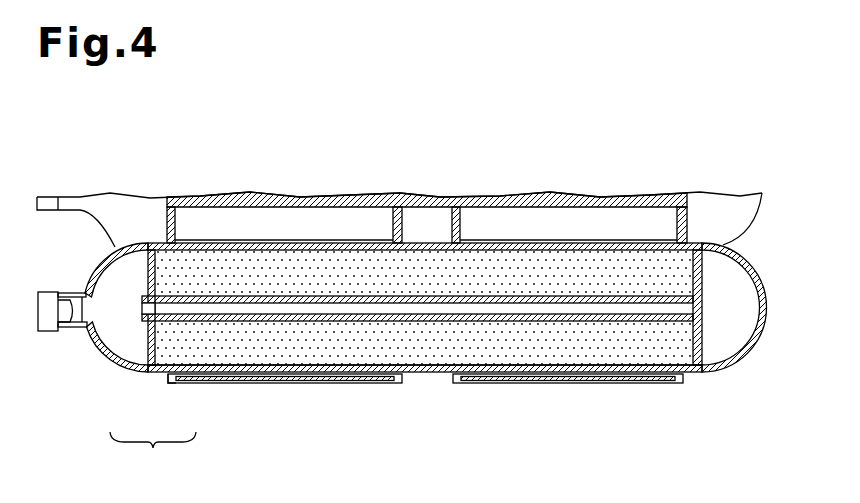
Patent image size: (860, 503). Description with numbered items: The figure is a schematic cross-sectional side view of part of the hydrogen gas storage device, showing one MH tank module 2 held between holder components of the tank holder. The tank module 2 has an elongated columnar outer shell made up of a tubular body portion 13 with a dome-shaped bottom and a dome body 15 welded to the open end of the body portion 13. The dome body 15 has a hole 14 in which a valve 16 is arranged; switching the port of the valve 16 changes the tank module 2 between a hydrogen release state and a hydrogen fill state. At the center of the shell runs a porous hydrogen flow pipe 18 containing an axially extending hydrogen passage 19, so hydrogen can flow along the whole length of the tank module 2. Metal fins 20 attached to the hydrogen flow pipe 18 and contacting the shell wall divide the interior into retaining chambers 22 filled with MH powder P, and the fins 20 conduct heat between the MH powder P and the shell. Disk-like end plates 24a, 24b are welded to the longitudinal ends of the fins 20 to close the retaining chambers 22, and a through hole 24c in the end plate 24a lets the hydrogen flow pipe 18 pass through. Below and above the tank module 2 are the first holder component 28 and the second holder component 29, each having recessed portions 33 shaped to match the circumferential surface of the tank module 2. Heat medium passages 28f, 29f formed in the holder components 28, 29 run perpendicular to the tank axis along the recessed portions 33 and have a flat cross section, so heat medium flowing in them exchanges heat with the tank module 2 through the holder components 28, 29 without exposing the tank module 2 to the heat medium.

The MH tank module 2 is at (760, 232).
The body portion 13 is at (173, 382).
The hole 14 is at (58, 320).
The dome body 15 is at (117, 372).
The valve 16 is at (38, 302).
The hydrogen flow pipe 18 is at (635, 322).
The hydrogen passage 19 is at (592, 303).
The fin 20 is at (533, 368).
The retaining chamber 22 is at (478, 360).
The end plate 24a is at (147, 277).
The end plate 24b is at (702, 342).
The through hole 24c is at (143, 306).
The first holder component 28 is at (238, 385).
The heat medium passage 28f is at (302, 385).
The second holder component 29 is at (215, 197).
The heat medium passage 29f is at (287, 212).
The recessed portion 33 is at (345, 250).
The MH powder P is at (492, 262).